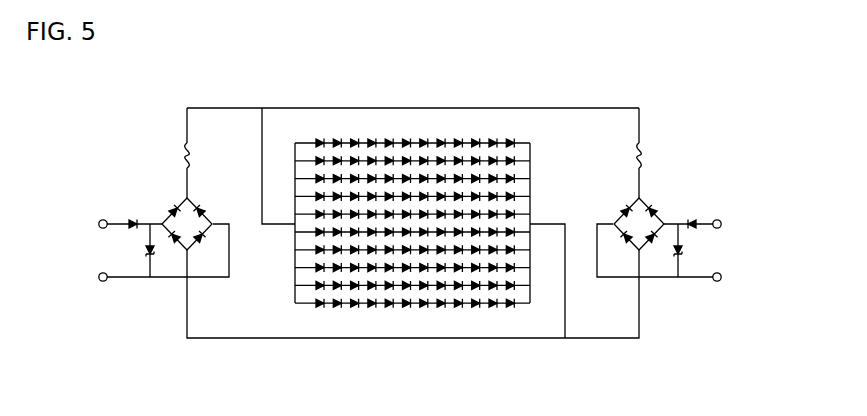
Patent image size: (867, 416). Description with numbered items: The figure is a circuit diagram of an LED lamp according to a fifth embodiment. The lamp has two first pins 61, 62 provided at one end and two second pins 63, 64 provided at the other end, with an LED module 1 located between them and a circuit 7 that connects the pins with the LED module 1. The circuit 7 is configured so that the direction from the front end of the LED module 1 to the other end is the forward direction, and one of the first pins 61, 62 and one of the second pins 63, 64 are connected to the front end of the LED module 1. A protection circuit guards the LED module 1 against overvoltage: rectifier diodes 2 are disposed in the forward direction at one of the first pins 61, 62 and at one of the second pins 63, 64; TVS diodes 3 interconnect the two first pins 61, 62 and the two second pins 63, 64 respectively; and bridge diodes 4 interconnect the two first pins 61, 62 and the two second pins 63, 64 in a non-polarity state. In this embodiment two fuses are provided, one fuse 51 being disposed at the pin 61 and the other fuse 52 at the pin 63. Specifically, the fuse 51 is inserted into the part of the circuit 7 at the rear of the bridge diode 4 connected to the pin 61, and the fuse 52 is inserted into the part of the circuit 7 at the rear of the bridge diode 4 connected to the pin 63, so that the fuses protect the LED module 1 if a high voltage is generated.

The LED module 1 is at (409, 127).
The rectifier diode 2 is at (126, 215).
The TVS diode 3 is at (143, 273).
The bridge diode 4 is at (162, 203).
The circuit 7 is at (207, 345).
The fuse 51 is at (180, 152).
The fuse 52 is at (650, 152).
The first pin 61 is at (93, 220).
The first pin 62 is at (93, 282).
The second pin 63 is at (728, 218).
The second pin 64 is at (728, 283).